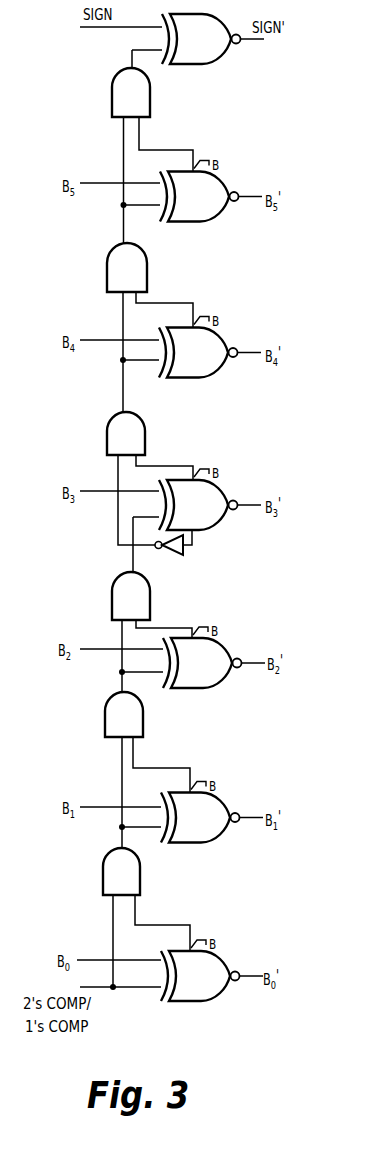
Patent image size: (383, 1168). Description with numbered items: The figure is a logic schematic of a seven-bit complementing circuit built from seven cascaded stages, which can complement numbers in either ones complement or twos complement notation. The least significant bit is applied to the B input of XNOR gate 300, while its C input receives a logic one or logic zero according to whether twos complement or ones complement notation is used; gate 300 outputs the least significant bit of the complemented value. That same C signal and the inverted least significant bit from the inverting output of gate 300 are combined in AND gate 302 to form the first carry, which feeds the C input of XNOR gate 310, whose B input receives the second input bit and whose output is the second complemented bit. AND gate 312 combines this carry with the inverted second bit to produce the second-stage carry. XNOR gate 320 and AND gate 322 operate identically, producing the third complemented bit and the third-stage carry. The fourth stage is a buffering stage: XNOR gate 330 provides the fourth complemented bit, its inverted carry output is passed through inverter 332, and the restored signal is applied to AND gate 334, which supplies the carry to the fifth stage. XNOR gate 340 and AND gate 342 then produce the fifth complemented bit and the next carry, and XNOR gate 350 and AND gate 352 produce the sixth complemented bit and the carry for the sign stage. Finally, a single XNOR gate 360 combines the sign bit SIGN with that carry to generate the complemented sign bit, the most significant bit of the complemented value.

The XNOR gate 300 is at (230, 952).
The AND gate 302 is at (140, 882).
The XNOR gate 310 is at (215, 800).
The AND gate 312 is at (150, 717).
The XNOR gate 320 is at (223, 651).
The AND gate 322 is at (150, 600).
The XNOR gate 330 is at (222, 495).
The inverter 332 is at (186, 557).
The AND gate 334 is at (157, 420).
The XNOR gate 340 is at (222, 342).
The AND gate 342 is at (147, 268).
The XNOR gate 350 is at (223, 184).
The AND gate 352 is at (150, 93).
The XNOR gate 360 is at (211, 18).